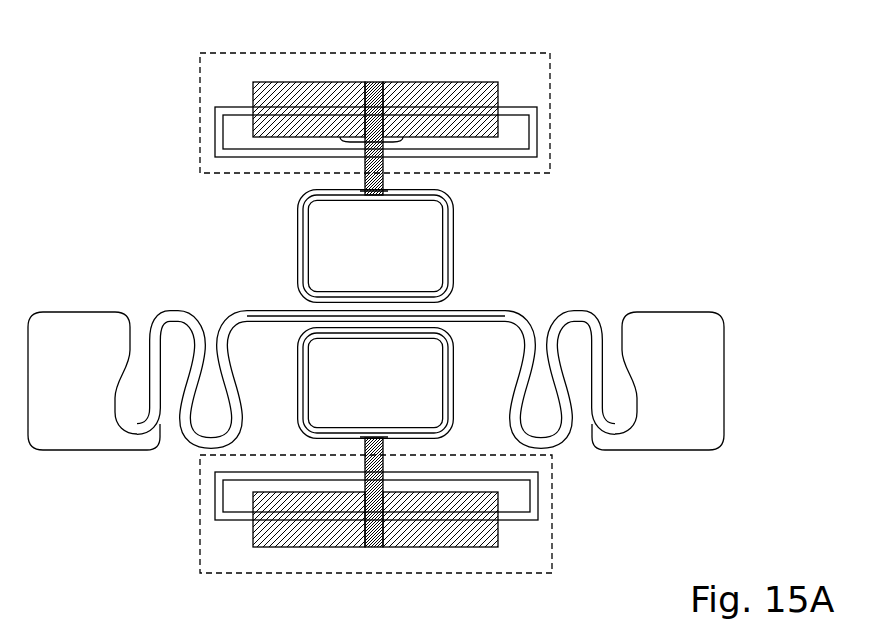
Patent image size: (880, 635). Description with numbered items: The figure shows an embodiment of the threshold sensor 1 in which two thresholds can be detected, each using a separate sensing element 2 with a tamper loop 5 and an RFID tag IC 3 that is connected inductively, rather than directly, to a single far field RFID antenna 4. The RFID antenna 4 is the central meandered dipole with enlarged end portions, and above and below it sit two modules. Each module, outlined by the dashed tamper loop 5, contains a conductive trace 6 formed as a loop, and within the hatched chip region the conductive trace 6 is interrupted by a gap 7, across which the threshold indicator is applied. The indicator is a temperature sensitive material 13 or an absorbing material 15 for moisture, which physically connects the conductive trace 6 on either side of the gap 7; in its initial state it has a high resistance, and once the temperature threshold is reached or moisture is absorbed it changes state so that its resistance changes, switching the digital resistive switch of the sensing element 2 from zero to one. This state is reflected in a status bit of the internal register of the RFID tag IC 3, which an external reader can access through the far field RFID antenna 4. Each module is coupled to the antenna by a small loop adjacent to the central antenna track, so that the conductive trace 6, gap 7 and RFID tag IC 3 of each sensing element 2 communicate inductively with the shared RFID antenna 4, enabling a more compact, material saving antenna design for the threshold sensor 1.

The threshold sensor 1 is at (376, 287).
The sensing element 2 is at (383, 180).
The RFID tag IC 3 is at (372, 473).
The RFID antenna 4 is at (616, 314).
The tamper loop 5 is at (550, 83).
The conductive trace 6 is at (215, 108).
The gap 7 is at (376, 82).
The temperature sensitive material 13 is at (405, 83).
The absorbing material 15 is at (525, 287).